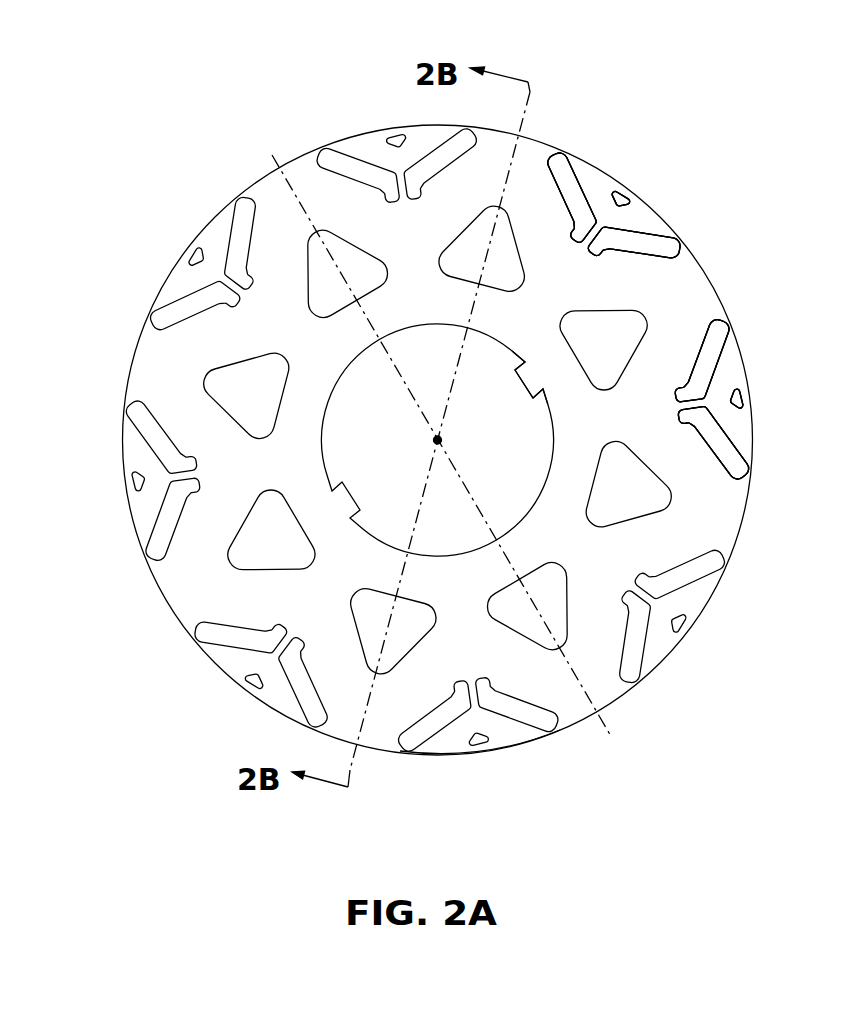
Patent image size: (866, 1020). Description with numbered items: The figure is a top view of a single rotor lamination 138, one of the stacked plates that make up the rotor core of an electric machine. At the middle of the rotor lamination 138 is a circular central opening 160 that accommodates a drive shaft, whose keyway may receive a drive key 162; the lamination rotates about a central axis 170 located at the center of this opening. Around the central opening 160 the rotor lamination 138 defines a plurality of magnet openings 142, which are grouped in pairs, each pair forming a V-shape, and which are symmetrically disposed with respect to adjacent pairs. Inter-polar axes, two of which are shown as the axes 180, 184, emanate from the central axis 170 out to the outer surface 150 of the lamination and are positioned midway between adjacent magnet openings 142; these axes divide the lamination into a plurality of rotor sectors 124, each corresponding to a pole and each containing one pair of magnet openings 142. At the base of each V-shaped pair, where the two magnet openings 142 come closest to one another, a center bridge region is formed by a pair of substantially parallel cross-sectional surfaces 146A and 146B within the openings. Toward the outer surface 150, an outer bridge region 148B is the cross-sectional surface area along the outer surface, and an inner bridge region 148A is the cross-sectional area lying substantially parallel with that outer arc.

The rotor sector 124 is at (428, 222).
The rotor lamination 138 is at (306, 181).
The magnet openings 142 is at (438, 150).
The cross-sectional surface area of bridge region 146A is at (598, 203).
The cross-sectional surface area of bridge region 146B is at (600, 233).
The inner bridge region 148A is at (577, 160).
The outer bridge region 148B is at (565, 150).
The outer surface 150 is at (520, 751).
The circular central opening 160 is at (493, 340).
The drive key 162 is at (513, 398).
The central axis 170 is at (443, 440).
The inter-polar axis 180 is at (353, 775).
The inter-polar axis 184 is at (612, 730).